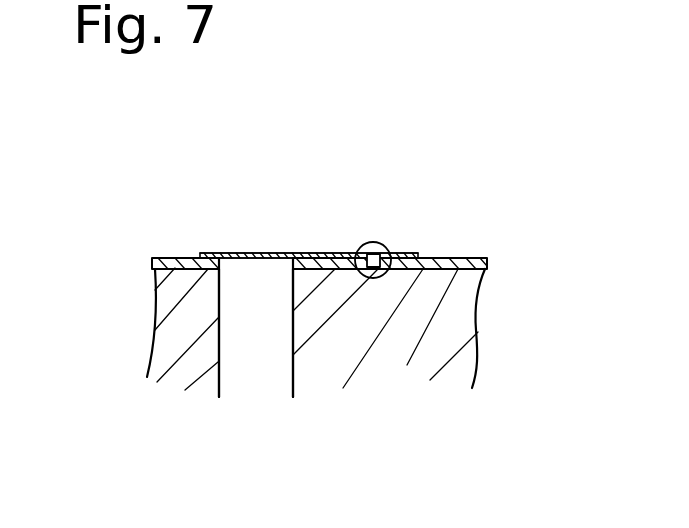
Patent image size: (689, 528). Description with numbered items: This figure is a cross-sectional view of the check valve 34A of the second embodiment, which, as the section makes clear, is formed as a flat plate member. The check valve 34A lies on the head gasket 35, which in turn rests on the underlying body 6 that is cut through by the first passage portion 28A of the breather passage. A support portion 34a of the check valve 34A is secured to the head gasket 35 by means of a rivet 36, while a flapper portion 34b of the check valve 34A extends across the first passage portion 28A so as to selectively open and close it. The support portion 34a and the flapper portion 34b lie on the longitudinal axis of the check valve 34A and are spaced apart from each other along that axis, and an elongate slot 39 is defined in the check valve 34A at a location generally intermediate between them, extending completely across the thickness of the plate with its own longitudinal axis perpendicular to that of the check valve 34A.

The substrate 6 is at (468, 360).
The first passage portion 28A is at (257, 362).
The head gasket 35 is at (163, 257).
The check valve 34A is at (267, 253).
The flapper portion 34b is at (245, 252).
The support portion 34a is at (397, 250).
The elongate slot 39 is at (347, 255).
The rivet 36 is at (383, 245).